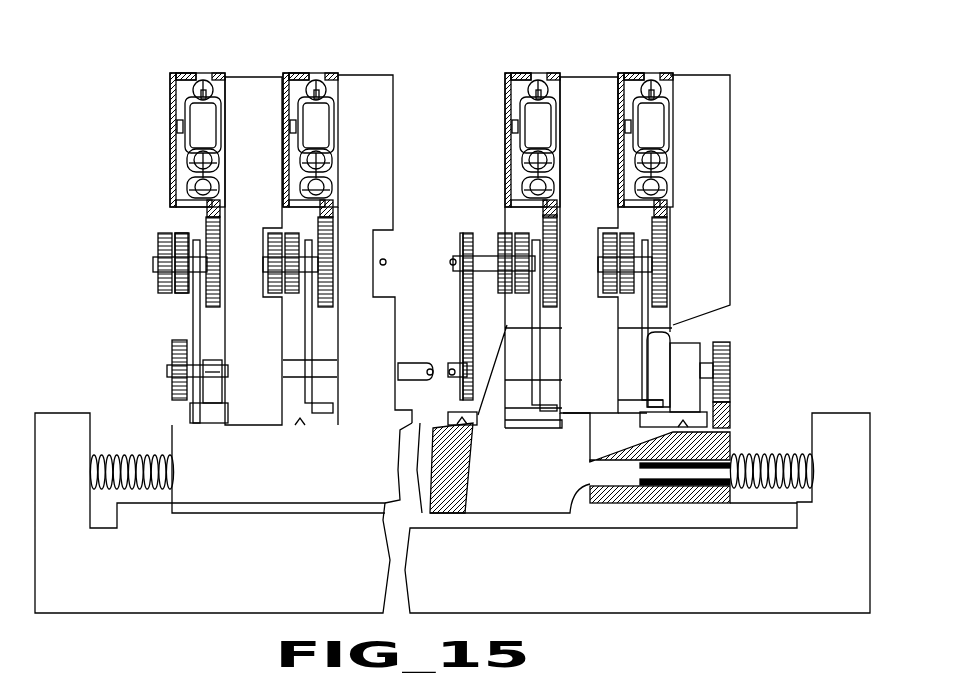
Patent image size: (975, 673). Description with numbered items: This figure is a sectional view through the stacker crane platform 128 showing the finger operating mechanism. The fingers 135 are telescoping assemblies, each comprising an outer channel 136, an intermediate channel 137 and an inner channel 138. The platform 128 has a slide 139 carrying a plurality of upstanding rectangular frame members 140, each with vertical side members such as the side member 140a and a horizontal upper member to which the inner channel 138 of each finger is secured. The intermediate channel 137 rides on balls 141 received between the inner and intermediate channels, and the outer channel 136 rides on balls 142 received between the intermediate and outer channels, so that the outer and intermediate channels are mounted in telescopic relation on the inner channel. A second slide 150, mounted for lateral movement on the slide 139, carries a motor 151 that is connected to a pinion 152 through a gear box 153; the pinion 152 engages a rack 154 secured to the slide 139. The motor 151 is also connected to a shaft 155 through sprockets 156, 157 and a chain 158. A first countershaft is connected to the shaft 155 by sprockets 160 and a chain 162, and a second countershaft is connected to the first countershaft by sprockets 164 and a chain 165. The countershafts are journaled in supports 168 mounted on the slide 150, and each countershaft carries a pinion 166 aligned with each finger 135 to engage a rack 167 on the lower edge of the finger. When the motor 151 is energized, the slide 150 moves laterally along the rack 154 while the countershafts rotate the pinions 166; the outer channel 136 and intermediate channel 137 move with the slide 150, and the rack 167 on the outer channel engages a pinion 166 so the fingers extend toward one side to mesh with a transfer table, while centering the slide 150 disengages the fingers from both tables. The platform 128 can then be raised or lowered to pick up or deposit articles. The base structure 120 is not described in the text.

The base 120 is at (754, 666).
The platform 128 is at (88, 405).
The fingers 135 is at (297, 68).
The outer channel 136 is at (192, 73).
The intermediate channel 137 is at (310, 142).
The inner channel 138 is at (313, 113).
The slide 139 is at (742, 446).
The upstanding rectangular frame members 140 is at (333, 443).
The vertical side member 140a is at (394, 206).
The balls 141 is at (308, 161).
The balls 142 is at (303, 92).
The slide 150 is at (560, 462).
The motor 151 is at (675, 335).
The pinion 152 is at (733, 382).
The gear box 153 is at (693, 348).
The rack 154 is at (732, 417).
The shaft 155 is at (453, 259).
The sprocket 156 is at (467, 378).
The sprocket 157 is at (466, 291).
The chain 158 is at (463, 344).
The sprocket 160 is at (160, 246).
The chain 162 is at (162, 236).
The sprocket 164 is at (160, 277).
The chain 165 is at (180, 300).
The pinion 166 is at (221, 291).
The rack 167 is at (320, 214).
The supports 168 is at (306, 250).